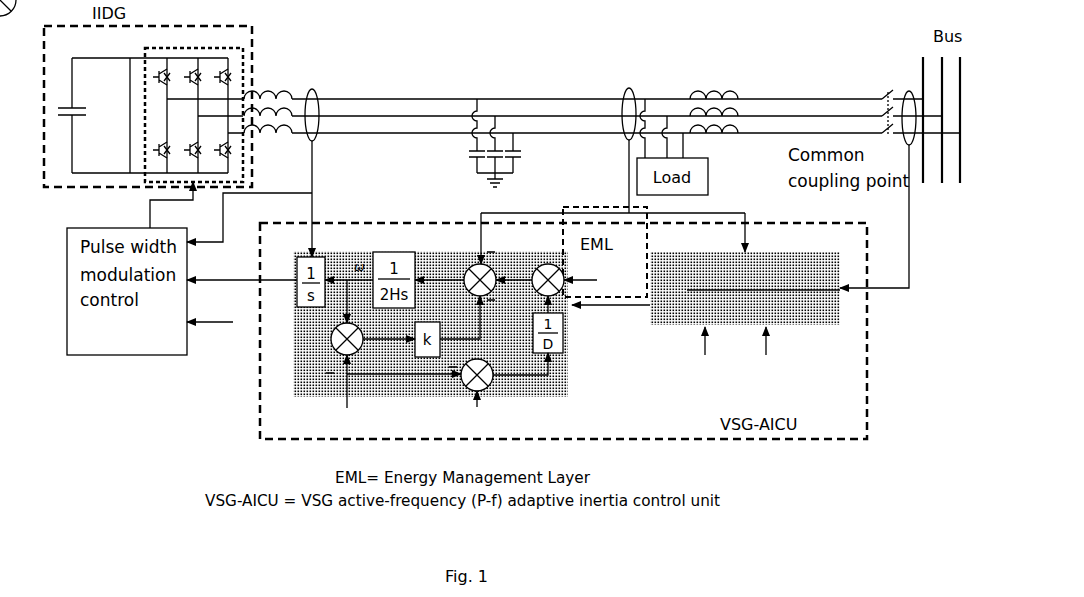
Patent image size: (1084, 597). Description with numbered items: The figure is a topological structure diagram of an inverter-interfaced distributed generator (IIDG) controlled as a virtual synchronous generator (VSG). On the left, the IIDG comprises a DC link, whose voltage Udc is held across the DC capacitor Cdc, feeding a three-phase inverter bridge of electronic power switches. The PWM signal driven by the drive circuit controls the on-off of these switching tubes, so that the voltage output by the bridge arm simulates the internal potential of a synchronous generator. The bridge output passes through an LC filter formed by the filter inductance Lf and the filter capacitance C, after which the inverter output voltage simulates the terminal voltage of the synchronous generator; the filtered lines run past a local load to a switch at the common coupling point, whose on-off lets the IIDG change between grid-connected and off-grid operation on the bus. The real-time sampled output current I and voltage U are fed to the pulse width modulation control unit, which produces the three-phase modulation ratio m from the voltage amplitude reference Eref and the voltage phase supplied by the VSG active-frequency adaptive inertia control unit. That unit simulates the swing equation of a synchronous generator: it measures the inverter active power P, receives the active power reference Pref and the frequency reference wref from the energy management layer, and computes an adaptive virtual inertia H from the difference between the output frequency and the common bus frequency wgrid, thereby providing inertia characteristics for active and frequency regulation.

The DC voltage Udc is at (150, 115).
The DC capacitor Cdc is at (88, 119).
The filter inductance Lf is at (268, 103).
The filter capacitance C is at (496, 147).
The active power P is at (613, 225).
The adaptive virtual inertia H is at (706, 308).
The three-phase modulation ratio m is at (171, 205).
The reference value of three-phase voltage range Eref is at (210, 311).
The reference value of active power Pref is at (595, 282).
The reference radian frequency wref is at (765, 355).
The common bus radian frequency wgrid is at (874, 216).
The sampled output current I is at (295, 174).
The sampled output voltage U is at (320, 174).